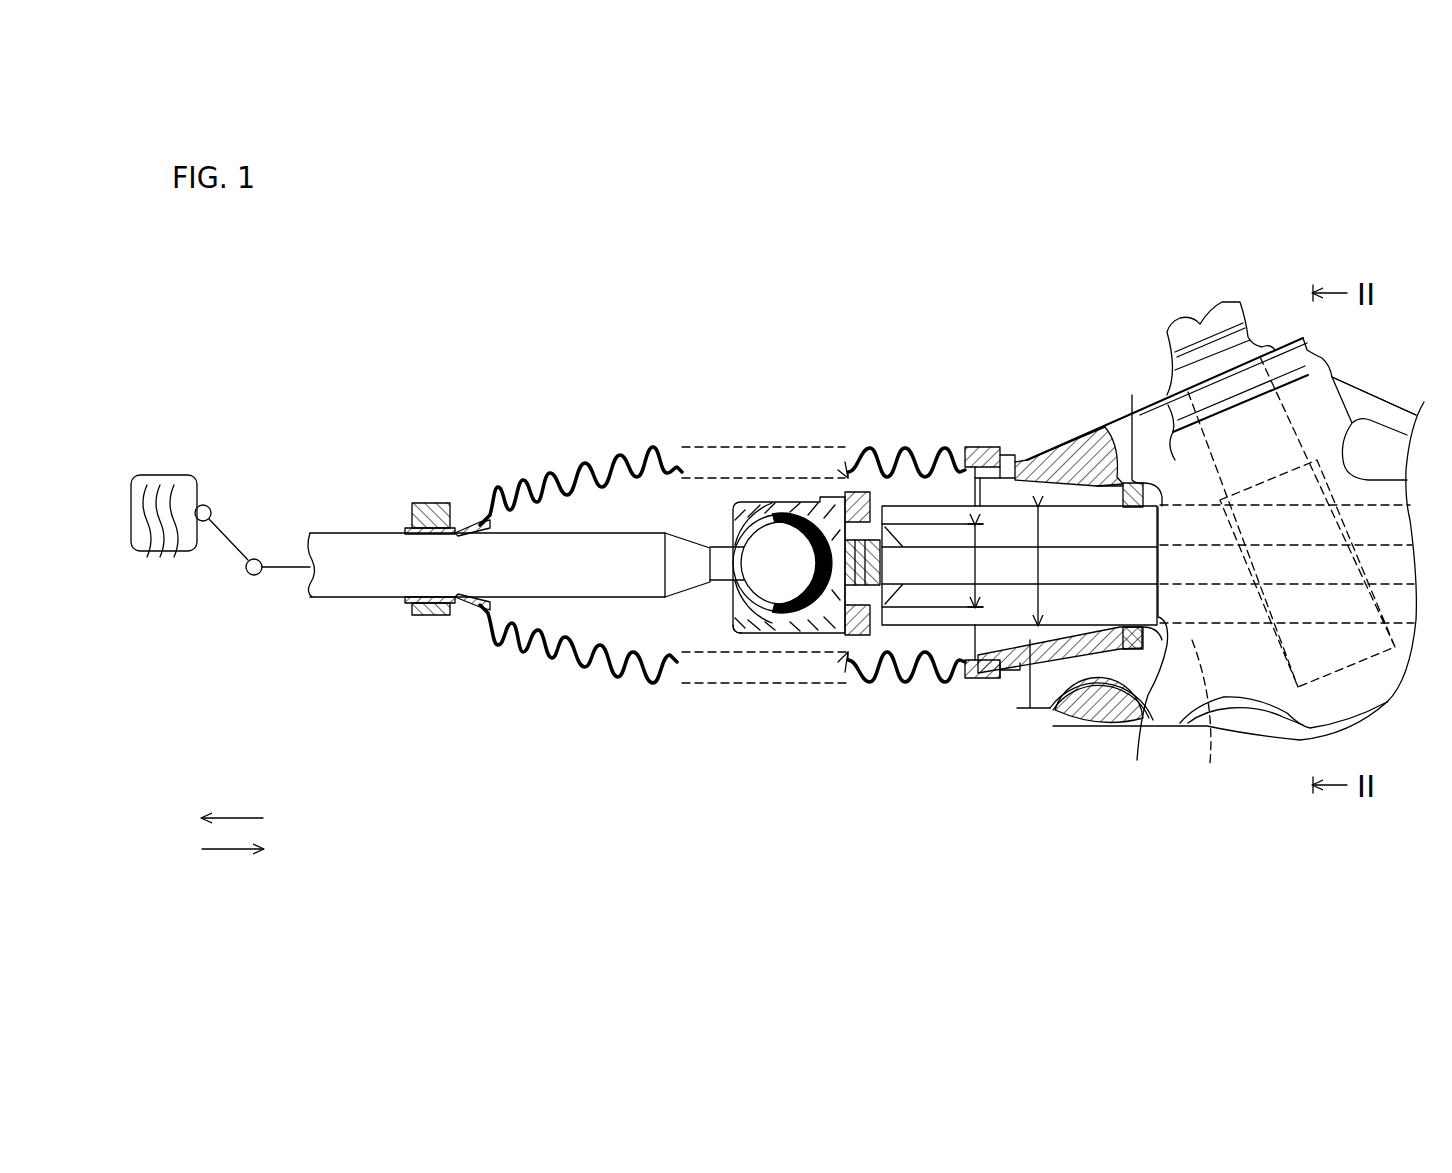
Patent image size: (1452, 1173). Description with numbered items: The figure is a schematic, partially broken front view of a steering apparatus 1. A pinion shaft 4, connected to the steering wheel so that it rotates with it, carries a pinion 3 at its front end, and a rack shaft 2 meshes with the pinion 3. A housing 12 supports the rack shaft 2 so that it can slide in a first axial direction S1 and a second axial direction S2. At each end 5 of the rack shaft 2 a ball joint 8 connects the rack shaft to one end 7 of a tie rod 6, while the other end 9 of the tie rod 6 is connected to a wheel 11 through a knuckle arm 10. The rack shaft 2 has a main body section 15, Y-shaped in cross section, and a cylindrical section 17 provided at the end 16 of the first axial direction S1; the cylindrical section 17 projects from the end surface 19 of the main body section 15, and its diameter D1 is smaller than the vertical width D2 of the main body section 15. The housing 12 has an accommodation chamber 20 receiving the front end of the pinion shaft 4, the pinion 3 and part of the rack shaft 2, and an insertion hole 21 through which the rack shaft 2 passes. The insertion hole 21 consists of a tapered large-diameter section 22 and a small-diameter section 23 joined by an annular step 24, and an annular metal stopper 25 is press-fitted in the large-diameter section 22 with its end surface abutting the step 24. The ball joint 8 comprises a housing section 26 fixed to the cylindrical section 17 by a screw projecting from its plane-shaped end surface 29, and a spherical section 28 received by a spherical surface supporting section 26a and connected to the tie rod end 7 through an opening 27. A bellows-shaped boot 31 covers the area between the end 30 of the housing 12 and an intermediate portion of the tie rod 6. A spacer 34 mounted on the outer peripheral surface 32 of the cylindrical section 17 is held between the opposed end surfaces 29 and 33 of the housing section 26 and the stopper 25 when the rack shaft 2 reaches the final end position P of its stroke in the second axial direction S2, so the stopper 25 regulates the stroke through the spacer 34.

The steering apparatus 1 is at (450, 310).
The rack shaft 2 is at (995, 504).
The pinion 3 is at (1355, 675).
The pinion shaft 4 is at (1243, 302).
The end of the rack shaft 5 is at (910, 506).
The tie rod 6 is at (372, 533).
The one end of the tie rod 7 is at (623, 530).
The ball joint 8 is at (742, 500).
The other end of the tie rod 9 is at (280, 565).
The knuckle arm 10 is at (228, 533).
The wheel 11 is at (162, 475).
The housing 12 is at (1393, 393).
The main body section 15 is at (955, 662).
The end of the first axial direction of the rack shaft 16 is at (903, 662).
The cylindrical section 17 is at (870, 645).
The end surface of the main body section 19 is at (900, 582).
The accommodation chamber 20 is at (1212, 719).
The insertion hole 21 is at (1090, 738).
The large-diameter section 22 is at (1083, 648).
The small-diameter section 23 is at (1145, 705).
The annular step 24 is at (1092, 465).
The stopper 25 is at (1117, 480).
The housing section 26 is at (783, 640).
The spherical surface supporting section 26a is at (765, 528).
The opening 27 is at (749, 582).
The spherical section 28 is at (752, 637).
The end surface of the housing section 29 is at (847, 640).
The end of the housing 30 is at (1006, 655).
The boot 31 is at (640, 456).
The outer peripheral surface of the cylindrical section 32 is at (870, 492).
The end surface of the stopper 33 is at (1137, 566).
The spacer 34 is at (840, 490).
The diameter of the cylindrical section D1 is at (995, 565).
The vertical width of the main body section D2 is at (1059, 565).
The final end position of the stroke P is at (1116, 492).
The first axial direction S1 is at (240, 818).
The second axial direction S2 is at (225, 849).